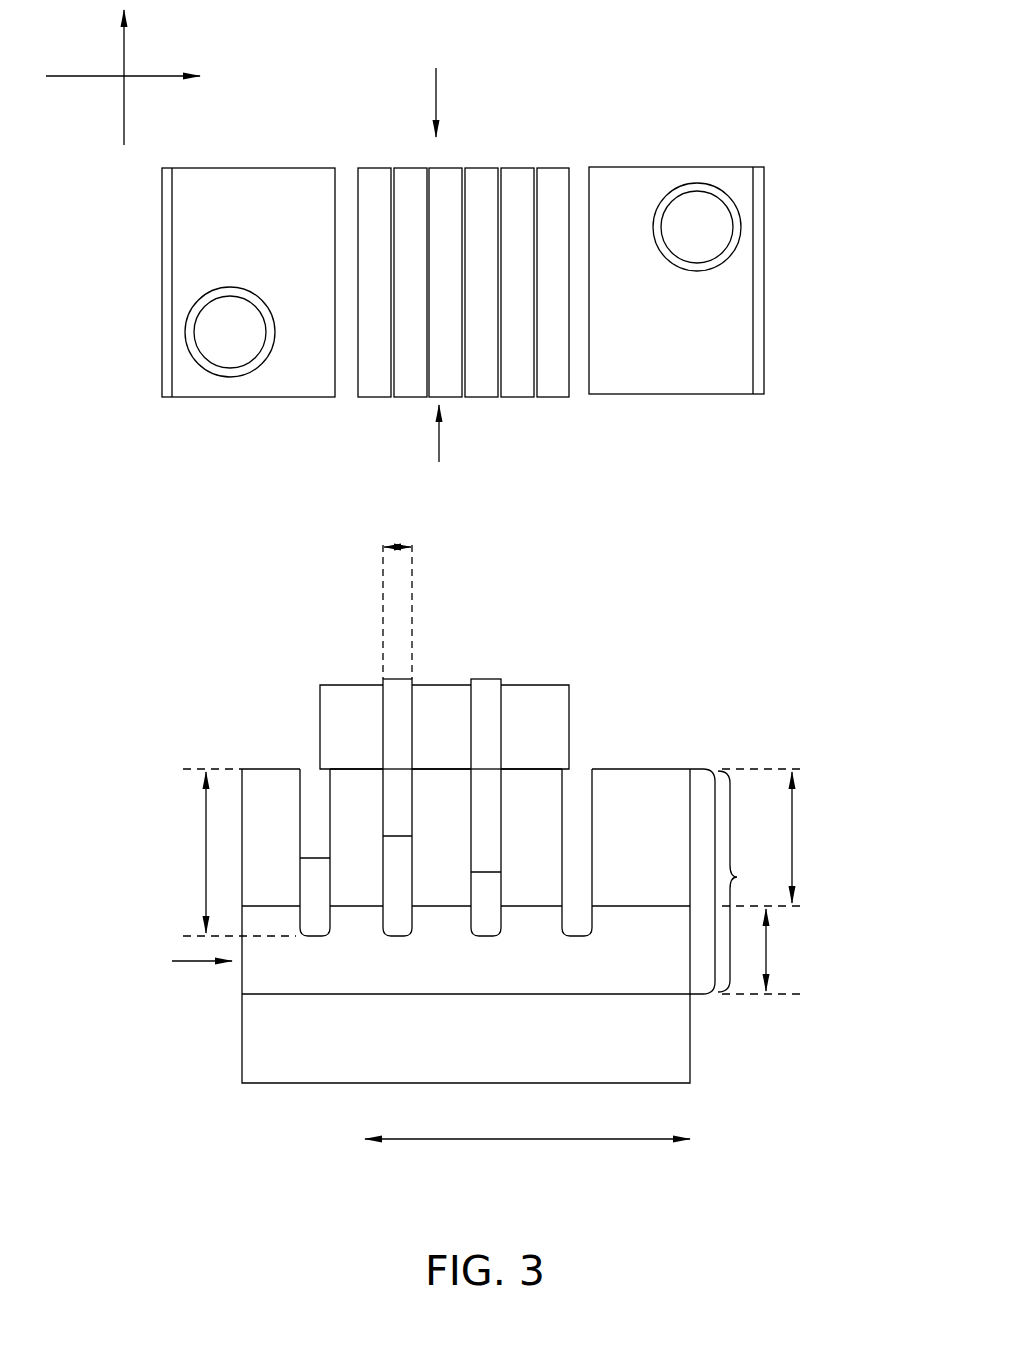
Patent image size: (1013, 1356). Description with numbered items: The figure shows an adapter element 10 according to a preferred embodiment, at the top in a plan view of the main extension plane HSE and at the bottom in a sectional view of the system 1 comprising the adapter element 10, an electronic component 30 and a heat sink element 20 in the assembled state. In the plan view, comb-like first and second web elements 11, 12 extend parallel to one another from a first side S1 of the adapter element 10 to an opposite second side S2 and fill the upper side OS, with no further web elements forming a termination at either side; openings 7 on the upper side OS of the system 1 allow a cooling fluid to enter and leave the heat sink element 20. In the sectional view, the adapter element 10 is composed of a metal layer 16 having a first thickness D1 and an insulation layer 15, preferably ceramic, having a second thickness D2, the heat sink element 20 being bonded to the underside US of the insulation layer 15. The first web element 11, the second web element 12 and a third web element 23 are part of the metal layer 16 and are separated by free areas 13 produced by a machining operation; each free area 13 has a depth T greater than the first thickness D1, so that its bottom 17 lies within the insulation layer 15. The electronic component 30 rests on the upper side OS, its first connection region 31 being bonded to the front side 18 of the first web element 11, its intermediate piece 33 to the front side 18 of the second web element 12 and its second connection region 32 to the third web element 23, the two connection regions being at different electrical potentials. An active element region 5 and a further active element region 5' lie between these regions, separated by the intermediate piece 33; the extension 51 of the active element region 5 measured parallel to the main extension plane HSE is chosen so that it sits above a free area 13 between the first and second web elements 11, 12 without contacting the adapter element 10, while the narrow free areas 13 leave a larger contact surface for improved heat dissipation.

The system 1 is at (748, 668).
The active element region 5 is at (360, 641).
The further active element region 5' is at (481, 667).
The openings 7 is at (235, 347).
The adapter element 10 is at (460, 901).
The first web element 11 is at (348, 800).
The second web element 12 is at (450, 860).
The free area 13 is at (400, 843).
The insulation layer 15 is at (179, 961).
The metal layer 16 is at (723, 815).
The bottom 17 is at (492, 937).
The front sides 18 is at (352, 768).
The heat sink element 20 is at (467, 1045).
The third web element 23 is at (537, 862).
The electronic component 30 is at (572, 660).
The first connection region 31 is at (321, 685).
The second connection region 32 is at (519, 693).
The intermediate piece 33 is at (453, 700).
The extension of the active element region 51 is at (398, 545).
The main extension plane HSE is at (125, 52).
The upper side OS is at (266, 703).
The underside US is at (350, 1023).
The depth T is at (206, 840).
The first thickness D1 is at (793, 837).
The second thickness D2 is at (770, 947).
The first side S1 is at (438, 451).
The second side S2 is at (438, 89).